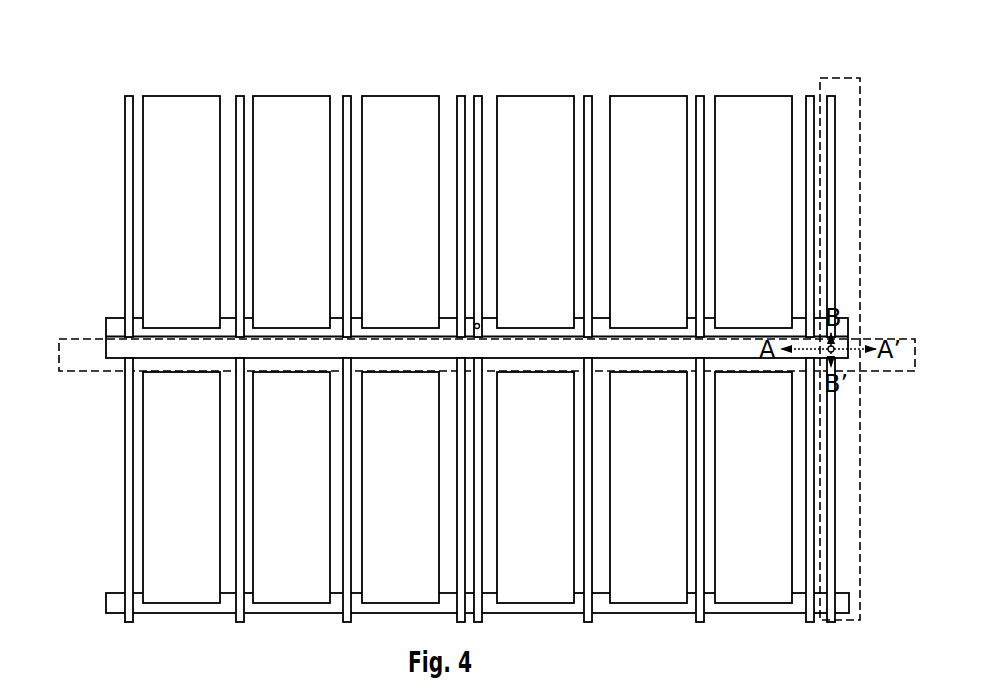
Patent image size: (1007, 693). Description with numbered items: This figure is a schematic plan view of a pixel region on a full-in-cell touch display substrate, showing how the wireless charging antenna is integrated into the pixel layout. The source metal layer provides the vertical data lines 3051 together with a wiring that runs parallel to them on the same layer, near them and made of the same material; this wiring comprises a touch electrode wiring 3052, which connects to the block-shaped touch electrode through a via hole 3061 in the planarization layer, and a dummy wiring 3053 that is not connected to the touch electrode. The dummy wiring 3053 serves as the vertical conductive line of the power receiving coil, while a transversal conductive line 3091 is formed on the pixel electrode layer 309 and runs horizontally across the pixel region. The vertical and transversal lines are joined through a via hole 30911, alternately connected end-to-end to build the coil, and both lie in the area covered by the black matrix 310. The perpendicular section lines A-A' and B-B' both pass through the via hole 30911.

The pixel electrode layer 309 is at (163, 468).
The transversal conductive line 3091 is at (475, 384).
The via hole 30911 is at (834, 347).
The data lines 3051 is at (811, 96).
The touch electrode wiring 3052 is at (480, 97).
The dummy wiring 3053 is at (833, 96).
The via hole 3061 is at (475, 325).
The black matrix 310 is at (860, 162).